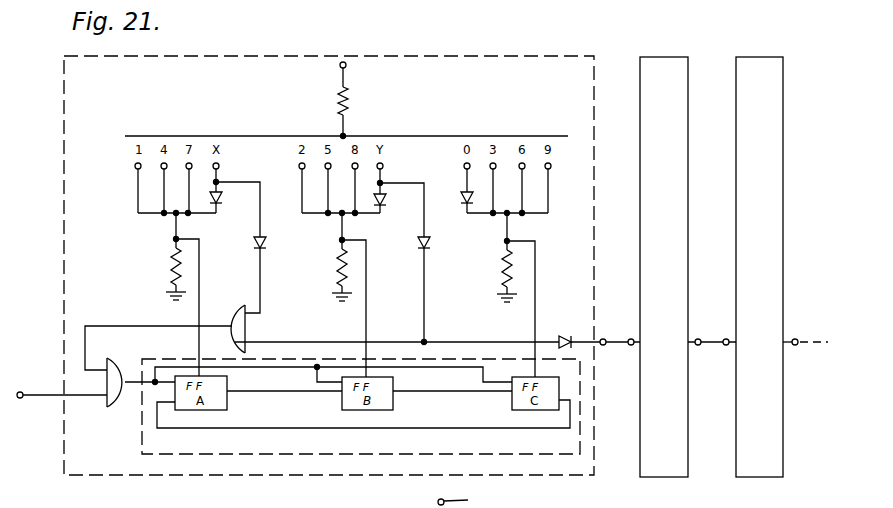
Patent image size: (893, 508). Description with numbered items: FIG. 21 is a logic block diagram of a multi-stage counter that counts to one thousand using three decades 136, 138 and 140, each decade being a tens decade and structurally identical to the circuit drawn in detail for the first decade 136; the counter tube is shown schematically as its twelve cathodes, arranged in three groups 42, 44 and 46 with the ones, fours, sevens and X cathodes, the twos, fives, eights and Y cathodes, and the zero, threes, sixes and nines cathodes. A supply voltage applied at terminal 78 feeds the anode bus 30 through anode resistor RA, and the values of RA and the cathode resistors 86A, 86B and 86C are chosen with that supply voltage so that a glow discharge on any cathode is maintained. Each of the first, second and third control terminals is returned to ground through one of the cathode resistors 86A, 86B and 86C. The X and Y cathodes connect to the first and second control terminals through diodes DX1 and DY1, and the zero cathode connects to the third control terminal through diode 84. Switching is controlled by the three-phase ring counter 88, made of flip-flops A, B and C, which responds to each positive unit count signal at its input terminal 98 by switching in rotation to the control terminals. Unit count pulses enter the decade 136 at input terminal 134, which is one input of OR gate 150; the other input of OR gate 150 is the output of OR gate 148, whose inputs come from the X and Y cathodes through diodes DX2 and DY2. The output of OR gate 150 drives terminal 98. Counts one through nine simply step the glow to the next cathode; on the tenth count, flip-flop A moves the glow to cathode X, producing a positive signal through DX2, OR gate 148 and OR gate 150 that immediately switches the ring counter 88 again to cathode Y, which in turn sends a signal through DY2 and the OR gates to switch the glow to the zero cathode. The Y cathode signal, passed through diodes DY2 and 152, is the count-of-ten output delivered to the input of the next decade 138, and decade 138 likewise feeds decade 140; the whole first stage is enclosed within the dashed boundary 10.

The dashed enclosure 10 is at (329, 265).
The ring counter 88 is at (138, 428).
The bus line 30 is at (226, 134).
The terminal 78 is at (339, 66).
The anode resistor RA is at (352, 100).
The group I terminal bus 42 is at (136, 217).
The group II terminal bus 44 is at (302, 217).
The group III terminal bus 46 is at (540, 216).
The diode 84 is at (458, 193).
The cathode resistor 86A is at (170, 251).
The cathode resistor 86B is at (336, 253).
The cathode resistor 86C is at (501, 262).
The diode DX1 is at (226, 203).
The diode DX2 is at (252, 253).
The diode DY1 is at (390, 197).
The diode DY2 is at (418, 252).
The OR gate 150 is at (118, 360).
The OR gate 148 is at (397, 332).
The diode 152 is at (565, 333).
The unit count input terminal 134 is at (21, 391).
The input terminal 98 is at (133, 388).
The first decade 136 is at (543, 477).
The second decade 138 is at (661, 478).
The third decade 140 is at (755, 478).